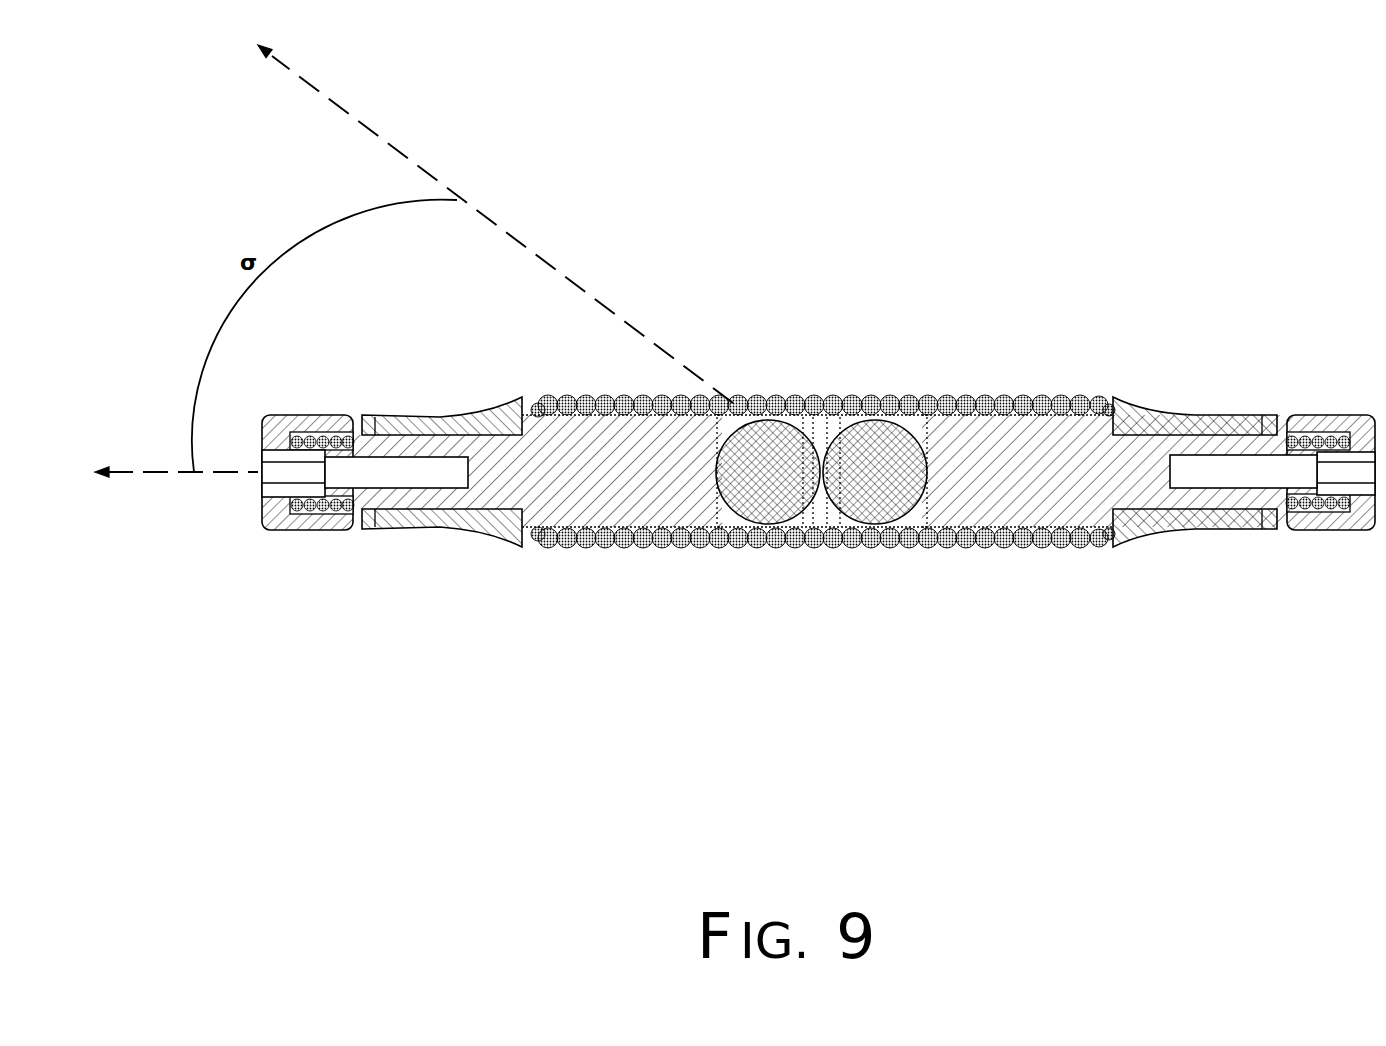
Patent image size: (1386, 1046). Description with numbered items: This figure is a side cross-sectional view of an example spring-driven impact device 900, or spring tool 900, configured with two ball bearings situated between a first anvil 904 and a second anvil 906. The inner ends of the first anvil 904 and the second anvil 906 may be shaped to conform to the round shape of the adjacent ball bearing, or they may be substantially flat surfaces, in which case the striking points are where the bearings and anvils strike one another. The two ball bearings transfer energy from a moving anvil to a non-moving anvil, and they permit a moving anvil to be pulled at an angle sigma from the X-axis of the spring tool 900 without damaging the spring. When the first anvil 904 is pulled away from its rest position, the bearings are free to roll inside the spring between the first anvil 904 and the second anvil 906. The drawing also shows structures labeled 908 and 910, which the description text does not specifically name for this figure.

The spring-driven impact device 900 is at (153, 75).
The first anvil 904 is at (660, 445).
The second anvil 906 is at (1050, 455).
The lens seat / spacer 908 is at (717, 472).
The coil spring sleeve 910 is at (626, 540).